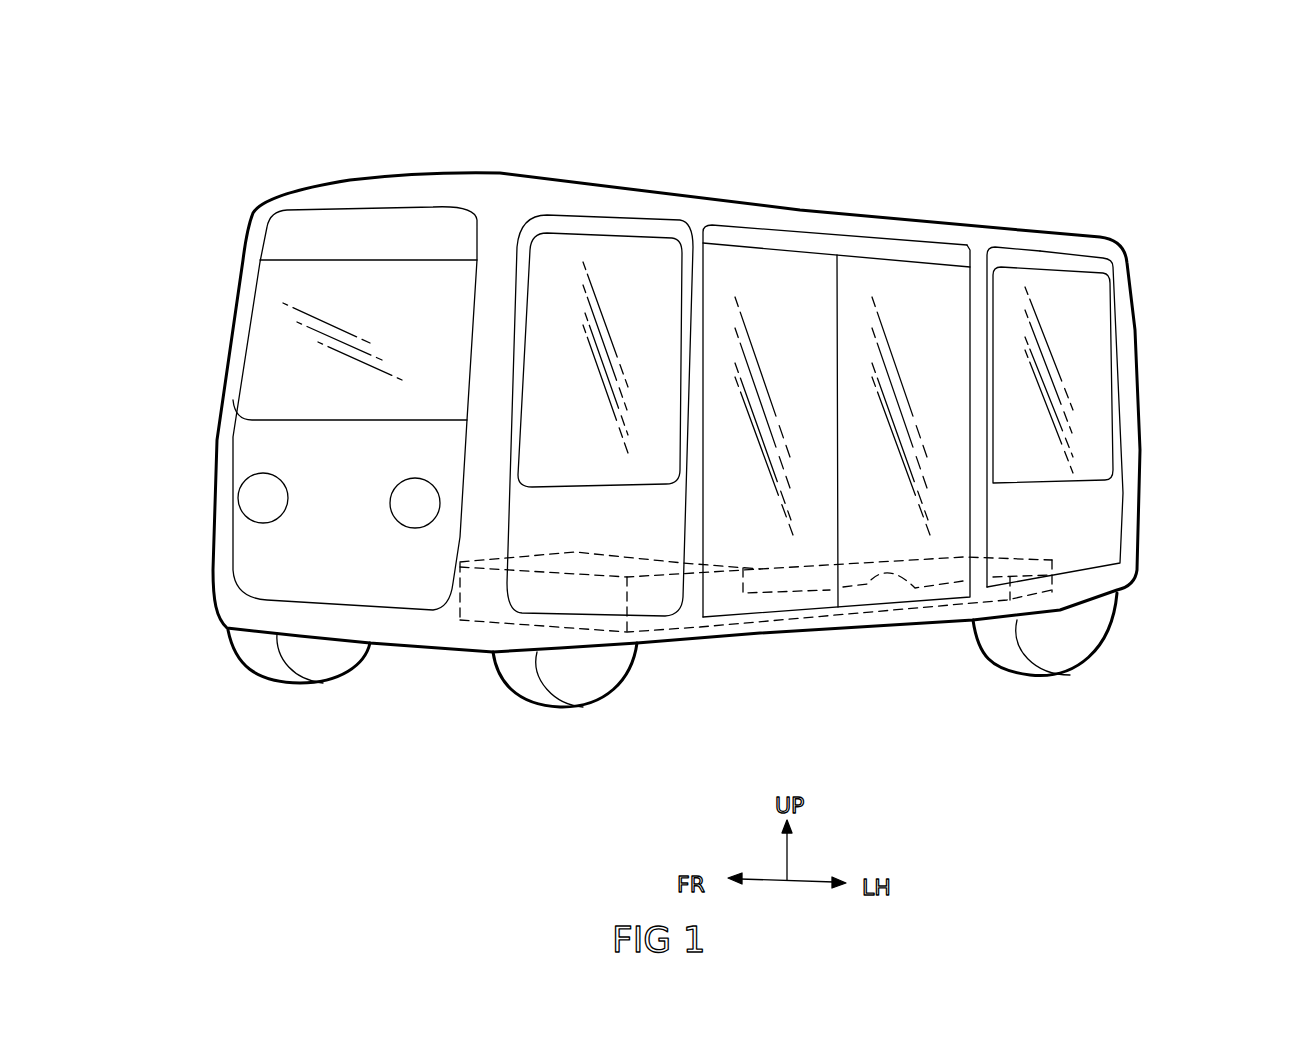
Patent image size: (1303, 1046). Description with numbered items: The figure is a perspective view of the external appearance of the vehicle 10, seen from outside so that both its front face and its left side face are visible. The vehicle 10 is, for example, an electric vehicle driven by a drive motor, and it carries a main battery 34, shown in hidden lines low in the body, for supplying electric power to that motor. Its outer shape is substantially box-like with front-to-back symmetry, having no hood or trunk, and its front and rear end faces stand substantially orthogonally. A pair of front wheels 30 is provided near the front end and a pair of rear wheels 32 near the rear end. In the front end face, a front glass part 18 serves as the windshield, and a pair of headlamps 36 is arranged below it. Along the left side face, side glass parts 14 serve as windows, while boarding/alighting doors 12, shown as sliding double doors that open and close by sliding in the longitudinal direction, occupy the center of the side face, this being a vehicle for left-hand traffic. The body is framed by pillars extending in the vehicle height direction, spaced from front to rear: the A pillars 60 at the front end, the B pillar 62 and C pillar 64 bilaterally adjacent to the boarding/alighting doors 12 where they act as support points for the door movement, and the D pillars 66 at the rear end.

The vehicle 10 is at (120, 186).
The boarding/alighting door 12 is at (792, 285).
The side glass part 14 is at (638, 273).
The front glass part 18 is at (262, 352).
The front wheel 30 is at (322, 667).
The rear wheel 32 is at (1067, 647).
The main battery 34 is at (917, 587).
The headlamp 36 is at (264, 499).
The A pillar 60 is at (243, 267).
The B pillar 62 is at (700, 277).
The C pillar 64 is at (980, 298).
The D pillar 66 is at (1123, 298).